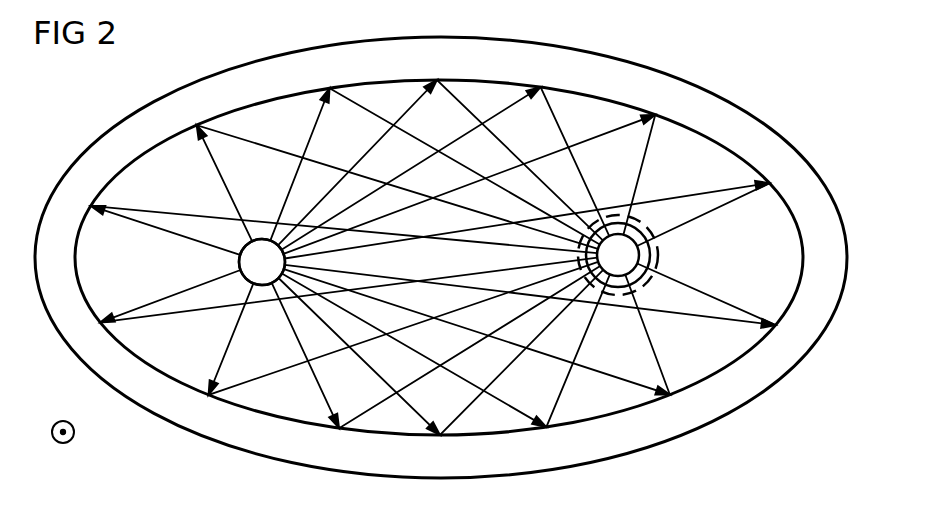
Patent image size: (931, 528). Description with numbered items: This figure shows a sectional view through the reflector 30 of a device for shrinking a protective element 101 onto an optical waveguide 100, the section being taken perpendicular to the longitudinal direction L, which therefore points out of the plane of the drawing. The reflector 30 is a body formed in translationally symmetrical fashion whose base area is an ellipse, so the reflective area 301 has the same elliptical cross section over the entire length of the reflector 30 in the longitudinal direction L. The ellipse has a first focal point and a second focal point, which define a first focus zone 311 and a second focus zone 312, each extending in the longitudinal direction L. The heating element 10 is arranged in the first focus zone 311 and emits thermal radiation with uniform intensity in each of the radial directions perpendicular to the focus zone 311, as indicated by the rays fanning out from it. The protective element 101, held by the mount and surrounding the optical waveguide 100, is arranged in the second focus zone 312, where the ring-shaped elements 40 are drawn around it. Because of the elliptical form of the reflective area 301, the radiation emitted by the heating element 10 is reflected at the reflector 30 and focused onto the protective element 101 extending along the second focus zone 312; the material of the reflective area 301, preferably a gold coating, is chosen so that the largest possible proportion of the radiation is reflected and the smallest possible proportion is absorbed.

The heating element 10 is at (240, 263).
The reflector 30 is at (652, 422).
The reflective area 301 is at (713, 373).
The first focus zone 311 is at (263, 260).
The second focus zone 312 is at (620, 246).
The tubular receiver 40 is at (659, 252).
The optical waveguide 100 is at (647, 286).
The protective element 101 is at (649, 223).
The longitudinal direction L is at (74, 436).